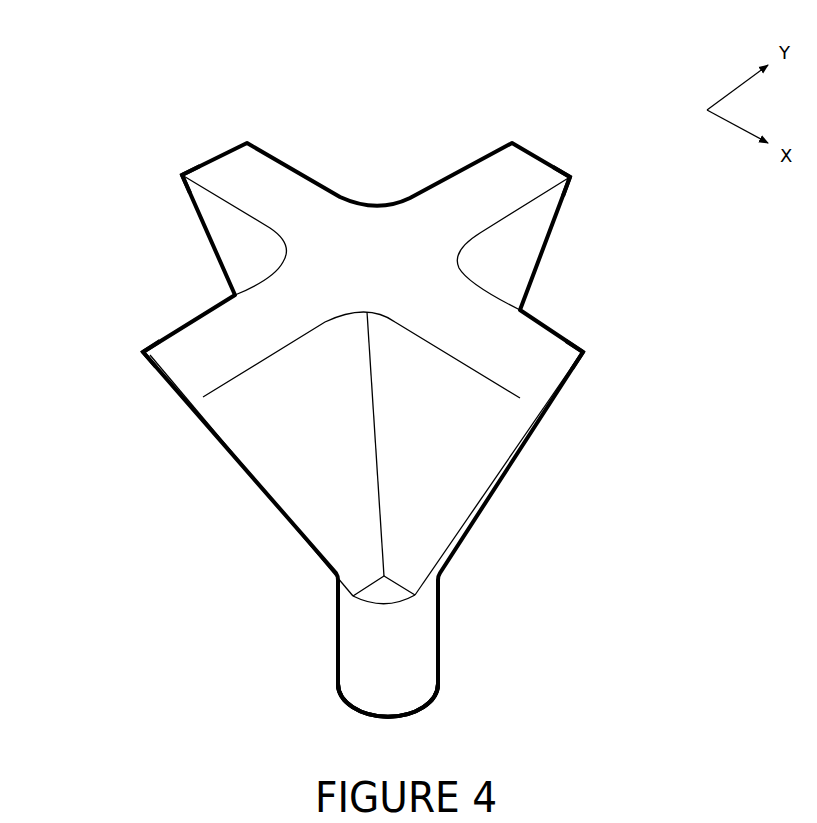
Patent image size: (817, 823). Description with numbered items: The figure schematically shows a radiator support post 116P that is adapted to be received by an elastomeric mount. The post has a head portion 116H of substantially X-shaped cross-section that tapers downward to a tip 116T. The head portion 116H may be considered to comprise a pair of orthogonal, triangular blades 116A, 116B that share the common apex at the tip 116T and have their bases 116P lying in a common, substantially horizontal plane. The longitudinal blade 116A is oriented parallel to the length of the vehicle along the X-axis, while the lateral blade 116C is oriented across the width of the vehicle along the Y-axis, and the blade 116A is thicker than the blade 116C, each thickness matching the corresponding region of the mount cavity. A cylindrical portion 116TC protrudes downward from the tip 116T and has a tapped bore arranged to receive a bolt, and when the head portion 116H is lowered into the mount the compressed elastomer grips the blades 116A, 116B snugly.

The head portion 116H is at (662, 287).
The radiator support post 116P is at (662, 590).
The longitudinal blade 116A is at (232, 243).
The triangular blade 116B is at (237, 173).
The lateral blade 116C is at (528, 238).
The tip 116T is at (336, 593).
The cylindrical portion 116TC is at (440, 643).